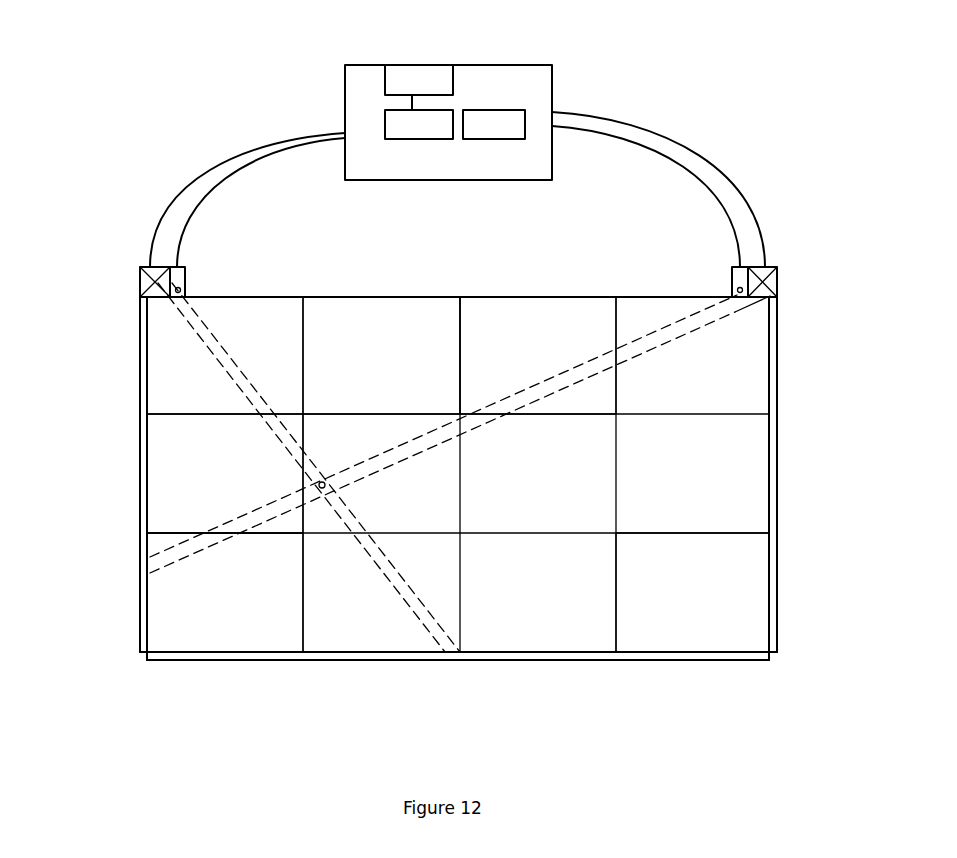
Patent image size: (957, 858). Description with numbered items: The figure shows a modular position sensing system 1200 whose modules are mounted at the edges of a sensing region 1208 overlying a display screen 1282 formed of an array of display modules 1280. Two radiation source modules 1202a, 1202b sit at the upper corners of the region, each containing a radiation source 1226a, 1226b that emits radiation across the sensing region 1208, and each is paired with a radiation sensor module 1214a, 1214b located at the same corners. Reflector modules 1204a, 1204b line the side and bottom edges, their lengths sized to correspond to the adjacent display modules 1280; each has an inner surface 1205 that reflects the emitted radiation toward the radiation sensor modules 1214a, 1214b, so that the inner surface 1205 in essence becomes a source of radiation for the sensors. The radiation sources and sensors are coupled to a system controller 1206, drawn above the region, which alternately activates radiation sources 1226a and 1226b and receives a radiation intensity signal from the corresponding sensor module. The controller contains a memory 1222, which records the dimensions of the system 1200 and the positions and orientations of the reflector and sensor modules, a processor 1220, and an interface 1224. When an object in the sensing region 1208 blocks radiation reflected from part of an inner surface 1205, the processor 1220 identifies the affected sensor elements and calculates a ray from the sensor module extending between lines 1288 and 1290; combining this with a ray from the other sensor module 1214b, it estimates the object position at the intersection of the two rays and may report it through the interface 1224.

The modular position sensing system 1200 is at (154, 155).
The radiation source module 1202a is at (187, 271).
The radiation source module 1202b is at (733, 270).
The reflector module 1204a is at (147, 541).
The reflector module 1204b is at (366, 655).
The inner surface 1205 is at (255, 650).
The system controller 1206 is at (470, 171).
The sensing region 1208 is at (526, 507).
The radiation sensor module 1214a is at (143, 284).
The radiation sensor module 1214b is at (778, 268).
The processor 1220 is at (441, 133).
The memory 1222 is at (516, 133).
The interface 1224 is at (441, 89).
The radiation source 1226a is at (187, 291).
The radiation source 1226b is at (735, 292).
The display module 1280 is at (210, 474).
The display screen 1282 is at (385, 359).
The line 1288 is at (353, 515).
The line 1290 is at (380, 563).